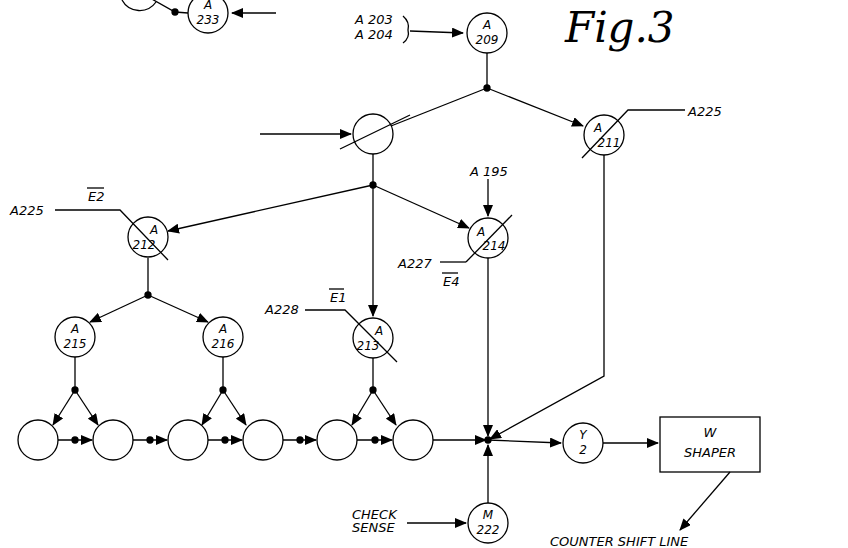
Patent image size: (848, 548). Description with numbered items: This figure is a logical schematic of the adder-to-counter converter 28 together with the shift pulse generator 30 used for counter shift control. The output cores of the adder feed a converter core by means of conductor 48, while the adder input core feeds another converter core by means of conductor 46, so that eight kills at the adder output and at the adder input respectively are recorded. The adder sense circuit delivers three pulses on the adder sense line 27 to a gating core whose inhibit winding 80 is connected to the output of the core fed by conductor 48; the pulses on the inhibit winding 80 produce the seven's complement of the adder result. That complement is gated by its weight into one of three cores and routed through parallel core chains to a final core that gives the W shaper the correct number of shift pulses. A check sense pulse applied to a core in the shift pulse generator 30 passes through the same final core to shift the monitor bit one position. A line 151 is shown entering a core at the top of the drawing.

The adder sense line 27 is at (280, 133).
The adder-to-counter converter 28 is at (150, 143).
The shift pulse generator 30 is at (178, 485).
The conductor 46 is at (492, 188).
The conductor 48 is at (432, 31).
The inhibit winding 80 is at (379, 115).
The input line to A233 151 is at (268, 13).